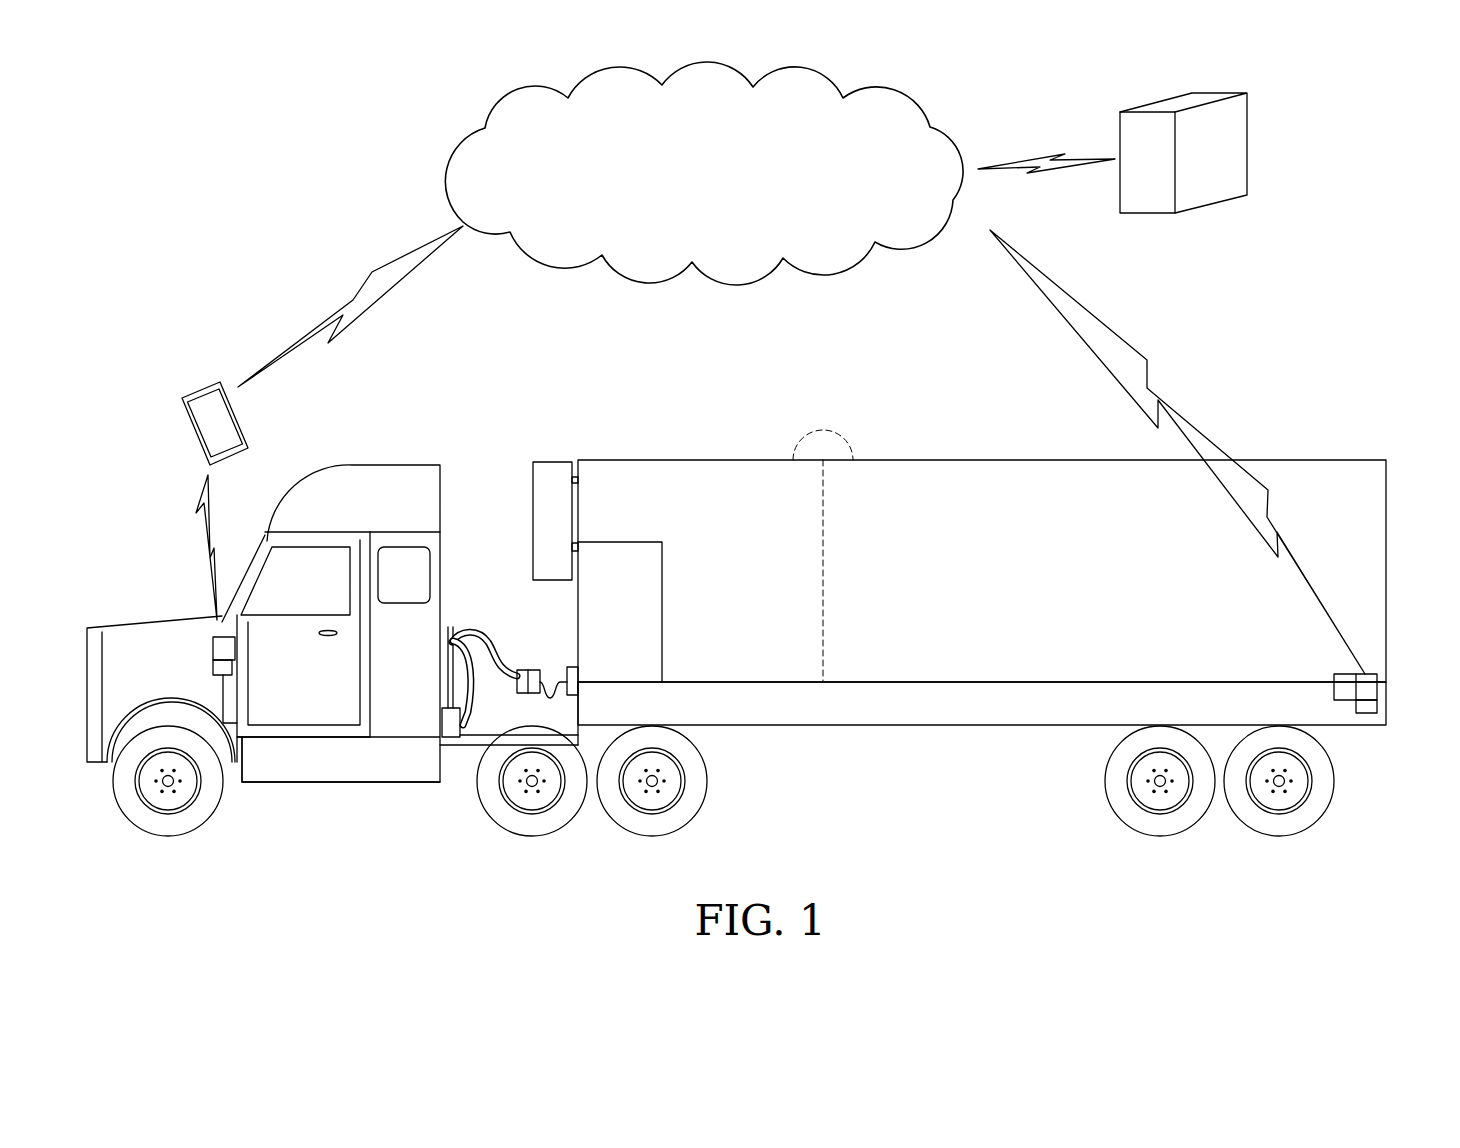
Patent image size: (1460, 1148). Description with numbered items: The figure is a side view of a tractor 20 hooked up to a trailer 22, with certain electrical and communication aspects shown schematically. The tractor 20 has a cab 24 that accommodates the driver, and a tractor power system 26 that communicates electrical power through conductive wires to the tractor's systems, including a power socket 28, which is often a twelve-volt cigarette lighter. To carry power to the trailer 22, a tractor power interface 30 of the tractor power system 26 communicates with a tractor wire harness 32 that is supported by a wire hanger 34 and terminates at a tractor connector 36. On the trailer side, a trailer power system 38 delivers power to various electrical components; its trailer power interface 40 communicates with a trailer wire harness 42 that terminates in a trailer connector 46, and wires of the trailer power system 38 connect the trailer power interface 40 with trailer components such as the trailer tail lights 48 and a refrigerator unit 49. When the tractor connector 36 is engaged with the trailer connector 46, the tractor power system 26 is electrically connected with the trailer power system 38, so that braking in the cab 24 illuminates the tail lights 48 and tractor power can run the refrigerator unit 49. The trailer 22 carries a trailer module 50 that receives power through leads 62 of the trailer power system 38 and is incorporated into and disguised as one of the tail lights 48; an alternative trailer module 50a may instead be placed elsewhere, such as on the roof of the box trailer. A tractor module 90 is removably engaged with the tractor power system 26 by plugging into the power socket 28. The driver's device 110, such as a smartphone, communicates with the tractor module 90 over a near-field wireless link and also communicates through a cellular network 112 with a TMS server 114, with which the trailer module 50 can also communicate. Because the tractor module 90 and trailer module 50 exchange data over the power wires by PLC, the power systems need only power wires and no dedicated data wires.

The tractor 20 is at (397, 616).
The trailer 22 is at (988, 617).
The cab 24 is at (394, 510).
The tractor power system 26 is at (341, 780).
The power socket 28 is at (183, 678).
The tractor power interface 30 is at (410, 767).
The tractor wire harness 32 is at (486, 629).
The wire hanger 34 is at (463, 636).
The tractor connector 36 is at (477, 730).
The trailer power system 38 is at (982, 731).
The trailer power interface 40 is at (570, 772).
The trailer wire harness 42 is at (559, 658).
The trailer connector 46 is at (497, 763).
The trailer tail lights 48 is at (1384, 731).
The refrigerator unit 49 is at (555, 489).
The trailer module 50 is at (1389, 686).
The trailer module 50a is at (837, 536).
The leads 62 is at (1354, 731).
The tractor module 90 is at (180, 619).
The driver device 110 is at (190, 409).
The cellular network 112 is at (704, 173).
The TMS server 114 is at (1127, 169).